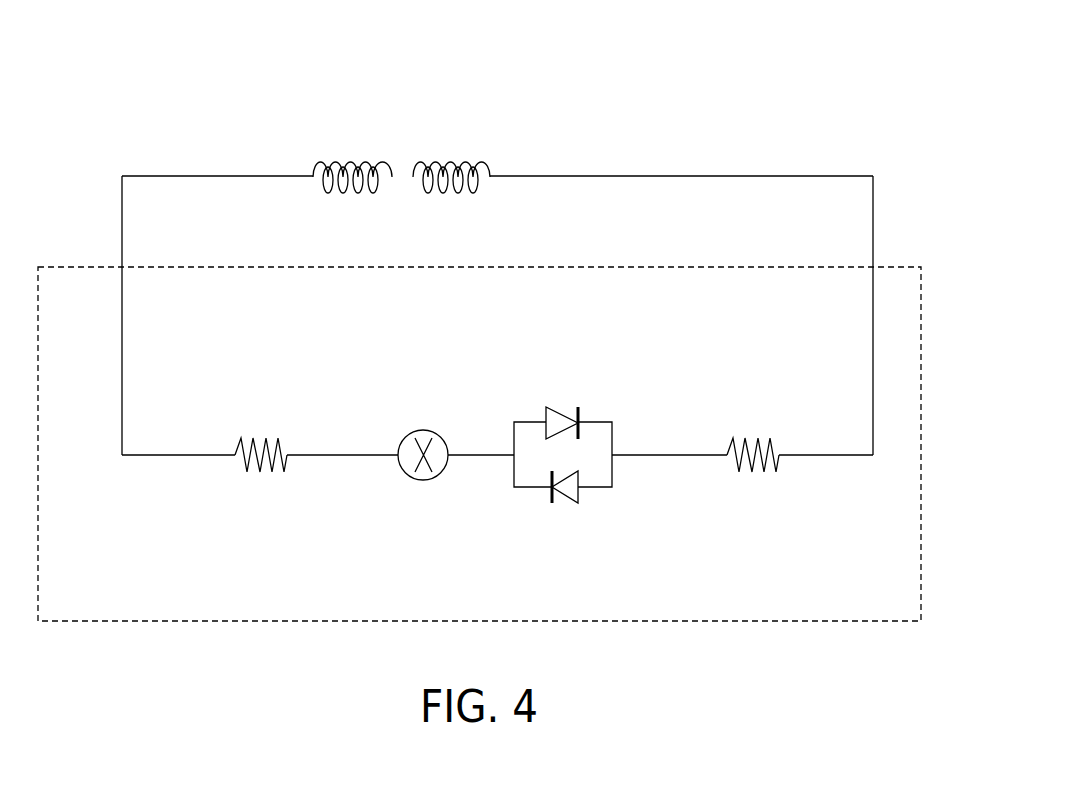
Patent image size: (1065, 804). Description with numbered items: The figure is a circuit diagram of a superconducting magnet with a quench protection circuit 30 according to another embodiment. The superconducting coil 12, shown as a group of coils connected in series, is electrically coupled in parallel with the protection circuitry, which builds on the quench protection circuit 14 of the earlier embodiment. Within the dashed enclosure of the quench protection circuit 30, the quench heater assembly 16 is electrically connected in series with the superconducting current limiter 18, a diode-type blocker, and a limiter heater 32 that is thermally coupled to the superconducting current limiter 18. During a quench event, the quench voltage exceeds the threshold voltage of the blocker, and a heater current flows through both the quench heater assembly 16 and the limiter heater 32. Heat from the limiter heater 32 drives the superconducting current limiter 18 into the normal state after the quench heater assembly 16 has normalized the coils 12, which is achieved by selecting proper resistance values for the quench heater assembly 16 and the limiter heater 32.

The superconducting coil 12 is at (452, 162).
The quench protection circuit 14 is at (252, 467).
The quench heater assembly 16 is at (423, 480).
The superconducting current limiter 18 is at (581, 490).
The quench protection circuit 30 is at (923, 358).
The limiter heater 32 is at (749, 477).